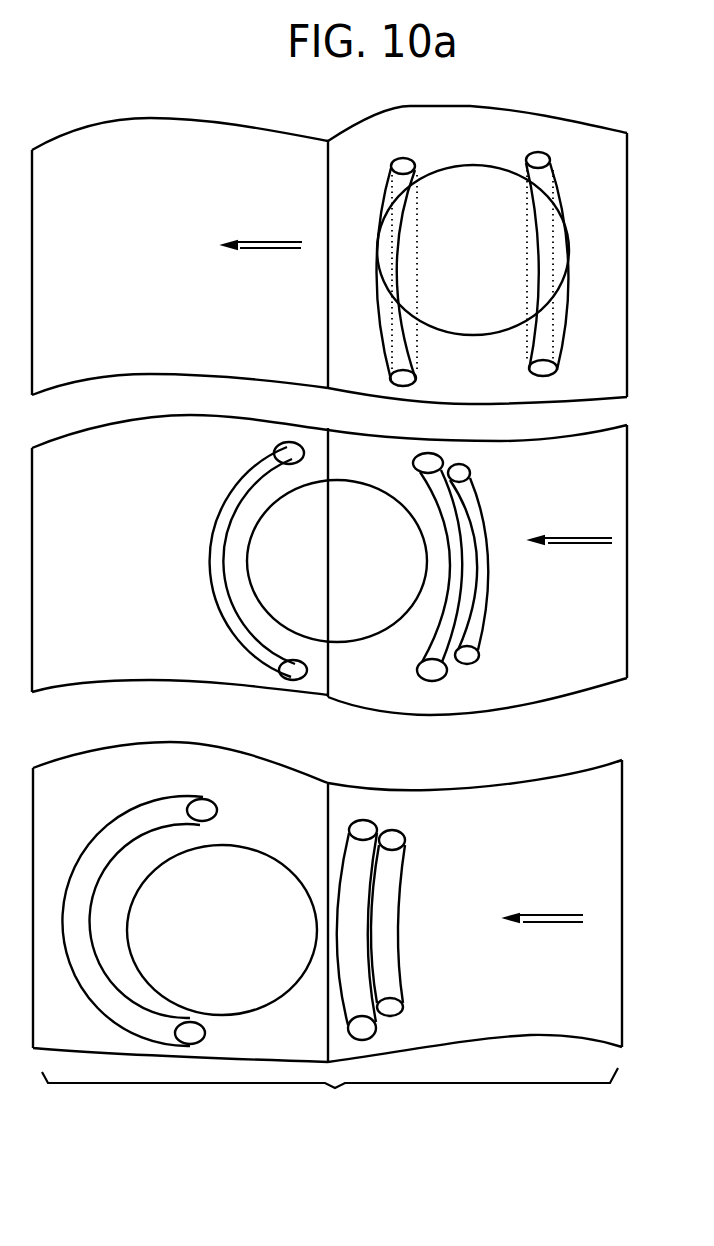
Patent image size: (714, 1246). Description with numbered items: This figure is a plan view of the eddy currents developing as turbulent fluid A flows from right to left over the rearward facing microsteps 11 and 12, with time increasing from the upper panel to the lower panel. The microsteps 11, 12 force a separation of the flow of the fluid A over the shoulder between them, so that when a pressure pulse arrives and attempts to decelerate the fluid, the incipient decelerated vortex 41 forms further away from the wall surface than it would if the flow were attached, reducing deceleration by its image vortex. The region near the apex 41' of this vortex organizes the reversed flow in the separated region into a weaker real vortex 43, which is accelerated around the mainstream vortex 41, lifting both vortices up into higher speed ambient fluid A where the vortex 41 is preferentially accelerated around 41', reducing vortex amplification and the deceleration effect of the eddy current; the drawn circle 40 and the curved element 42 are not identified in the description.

The microstep 11 is at (328, 175).
The microstep 12 is at (625, 170).
The circular opening 40 is at (475, 313).
The incipient decelerated vortex 41 is at (475, 596).
The apex of incipient decelerated vortex 41' is at (571, 265).
The curved tube 42 is at (383, 297).
The vortex 43 is at (475, 550).
The fluid A is at (272, 250).